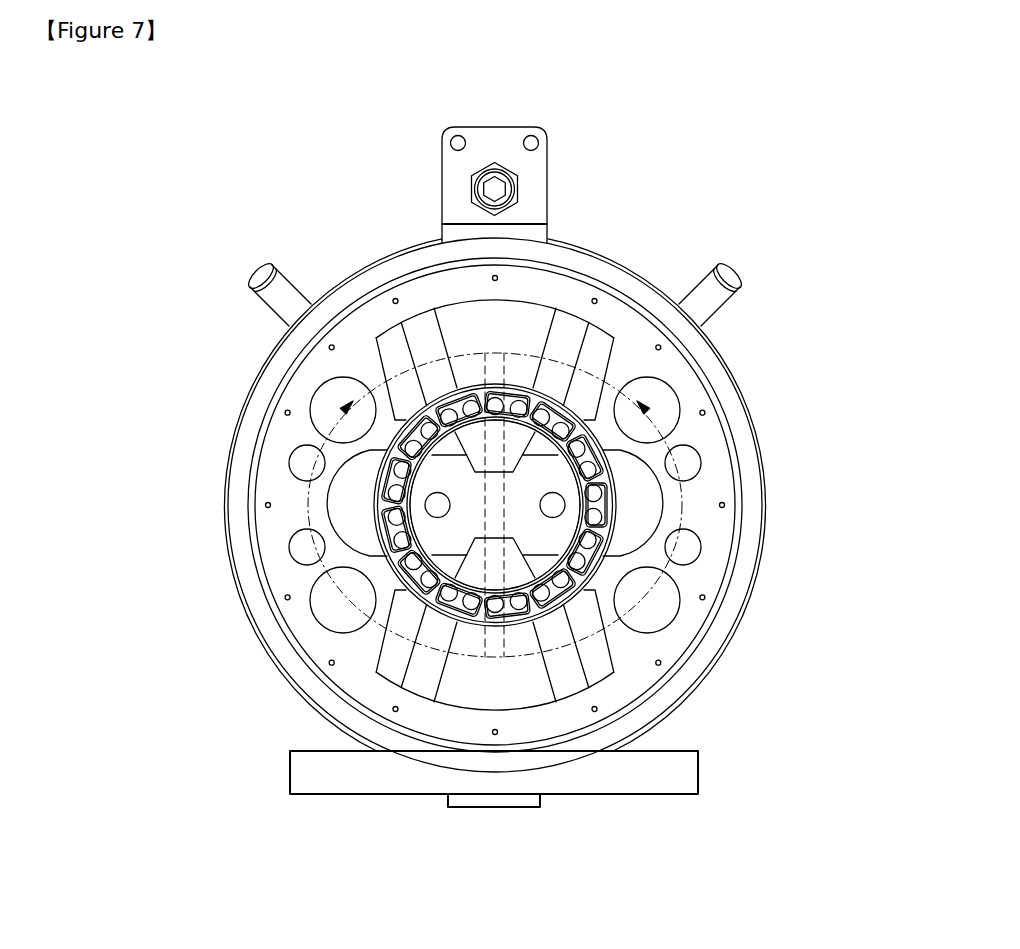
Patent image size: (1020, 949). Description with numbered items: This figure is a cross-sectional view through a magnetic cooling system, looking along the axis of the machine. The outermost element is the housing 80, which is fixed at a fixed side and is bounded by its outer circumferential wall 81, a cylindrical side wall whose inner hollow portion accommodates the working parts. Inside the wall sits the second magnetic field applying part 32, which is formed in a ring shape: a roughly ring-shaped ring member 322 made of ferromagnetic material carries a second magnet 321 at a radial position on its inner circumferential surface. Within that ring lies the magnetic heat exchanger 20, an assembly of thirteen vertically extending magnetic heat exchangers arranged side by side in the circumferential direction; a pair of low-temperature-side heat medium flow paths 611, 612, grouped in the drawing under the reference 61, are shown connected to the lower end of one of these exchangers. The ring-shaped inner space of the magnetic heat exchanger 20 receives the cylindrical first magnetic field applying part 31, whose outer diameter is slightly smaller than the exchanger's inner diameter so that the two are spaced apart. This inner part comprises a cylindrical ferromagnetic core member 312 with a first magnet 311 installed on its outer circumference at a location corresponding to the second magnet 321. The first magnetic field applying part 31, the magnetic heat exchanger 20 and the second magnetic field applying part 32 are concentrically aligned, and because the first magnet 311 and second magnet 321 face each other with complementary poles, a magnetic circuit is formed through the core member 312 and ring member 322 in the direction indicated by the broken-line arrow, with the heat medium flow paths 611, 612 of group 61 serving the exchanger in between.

The housing 80 is at (541, 467).
The outer circumferential wall 81 is at (713, 372).
The second magnetic field applying part 32 is at (496, 426).
The second magnet 321 is at (530, 325).
The ring member 322 is at (607, 310).
The bearing 61 is at (631, 505).
The low-temperature-side heat medium flow path 611 is at (600, 495).
The low-temperature-side heat medium flow path 612 is at (600, 518).
The magnetic heat exchanger 20 is at (585, 457).
The first magnetic field applying part 31 is at (350, 567).
The first magnet 311 is at (477, 570).
The core member 312 is at (447, 530).